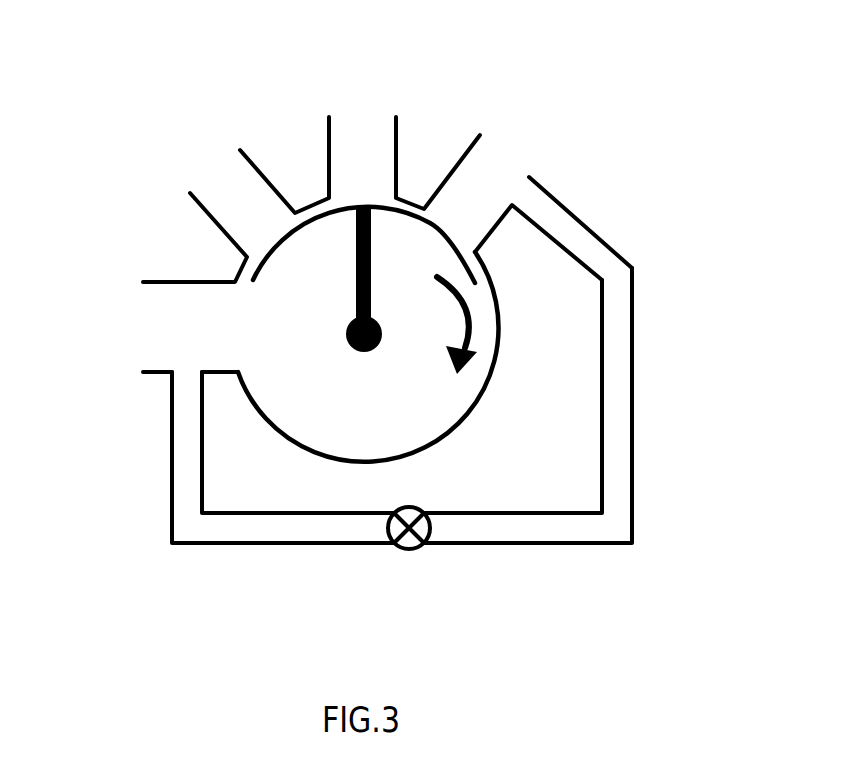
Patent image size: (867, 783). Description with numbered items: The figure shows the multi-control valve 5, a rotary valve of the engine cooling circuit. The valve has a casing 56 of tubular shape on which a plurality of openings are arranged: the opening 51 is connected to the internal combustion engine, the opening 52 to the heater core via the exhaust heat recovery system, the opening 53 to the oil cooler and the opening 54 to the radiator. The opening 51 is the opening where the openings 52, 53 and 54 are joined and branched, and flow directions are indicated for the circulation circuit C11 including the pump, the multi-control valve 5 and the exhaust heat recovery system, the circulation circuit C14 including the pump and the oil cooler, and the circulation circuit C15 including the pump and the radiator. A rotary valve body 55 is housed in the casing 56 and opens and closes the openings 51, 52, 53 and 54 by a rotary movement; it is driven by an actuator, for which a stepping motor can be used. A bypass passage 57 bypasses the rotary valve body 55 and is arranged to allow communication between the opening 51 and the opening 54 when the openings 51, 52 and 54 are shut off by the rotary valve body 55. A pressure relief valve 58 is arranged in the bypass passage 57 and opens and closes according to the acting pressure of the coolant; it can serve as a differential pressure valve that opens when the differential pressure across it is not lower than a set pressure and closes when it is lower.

The multi-control valve 5 is at (123, 90).
The circulation circuit C11 is at (211, 143).
The circulation circuit C14 is at (359, 92).
The circulation circuit C15 is at (518, 130).
The opening 51 is at (162, 372).
The opening 52 is at (206, 211).
The opening 53 is at (329, 167).
The opening 54 is at (450, 170).
The rotary valve body 55 is at (357, 285).
The casing 56 is at (498, 330).
The bypass passage 57 is at (348, 545).
The pressure relief valve 58 is at (409, 549).